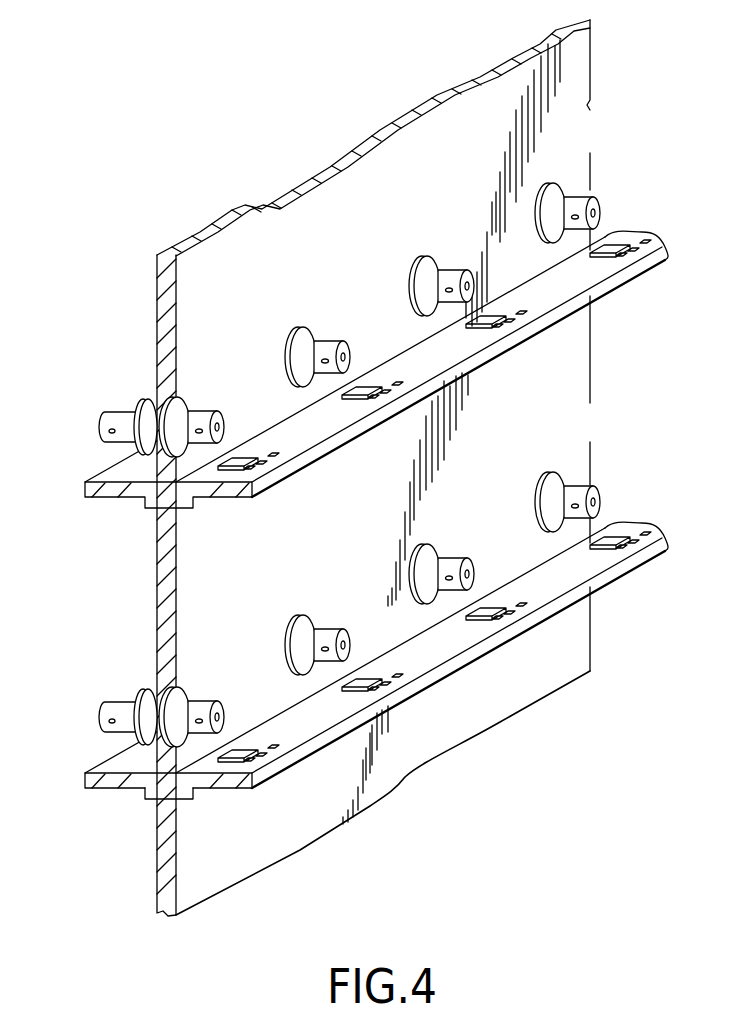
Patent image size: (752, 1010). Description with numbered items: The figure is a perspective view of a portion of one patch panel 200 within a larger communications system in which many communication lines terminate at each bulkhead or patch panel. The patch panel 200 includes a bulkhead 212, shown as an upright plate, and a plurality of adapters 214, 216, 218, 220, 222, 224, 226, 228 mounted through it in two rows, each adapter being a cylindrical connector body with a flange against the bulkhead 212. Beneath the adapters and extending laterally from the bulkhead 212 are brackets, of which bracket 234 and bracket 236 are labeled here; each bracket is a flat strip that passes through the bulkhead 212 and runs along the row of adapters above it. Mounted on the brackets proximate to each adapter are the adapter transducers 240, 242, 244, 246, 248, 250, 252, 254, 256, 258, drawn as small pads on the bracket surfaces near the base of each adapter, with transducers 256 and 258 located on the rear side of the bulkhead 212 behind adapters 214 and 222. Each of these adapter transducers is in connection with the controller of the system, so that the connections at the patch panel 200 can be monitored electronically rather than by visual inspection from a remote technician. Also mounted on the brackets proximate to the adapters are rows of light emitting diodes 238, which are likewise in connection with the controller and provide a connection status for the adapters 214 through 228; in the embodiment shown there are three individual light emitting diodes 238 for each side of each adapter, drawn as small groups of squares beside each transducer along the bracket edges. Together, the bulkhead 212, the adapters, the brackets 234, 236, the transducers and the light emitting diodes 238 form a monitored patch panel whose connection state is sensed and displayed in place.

The patch panel 200 is at (190, 103).
The bulkhead 212 is at (190, 238).
The adapter 214 is at (197, 418).
The adapter 216 is at (325, 347).
The adapter 218 is at (450, 272).
The adapter 220 is at (577, 200).
The adapter 222 is at (198, 704).
The adapter 224 is at (327, 637).
The adapter 226 is at (448, 562).
The adapter 228 is at (578, 489).
The bracket 234 is at (97, 789).
The bracket 236 is at (236, 798).
The light emitting diodes 238 is at (552, 302).
The adapter transducer 240 is at (240, 460).
The adapter transducer 242 is at (370, 385).
The adapter transducer 244 is at (497, 314).
The adapter transducer 246 is at (625, 242).
The adapter transducer 248 is at (250, 749).
The adapter transducer 250 is at (375, 678).
The adapter transducer 252 is at (495, 608).
The adapter transducer 254 is at (627, 533).
The adapter transducer 256 is at (150, 460).
The adapter transducer 258 is at (150, 750).